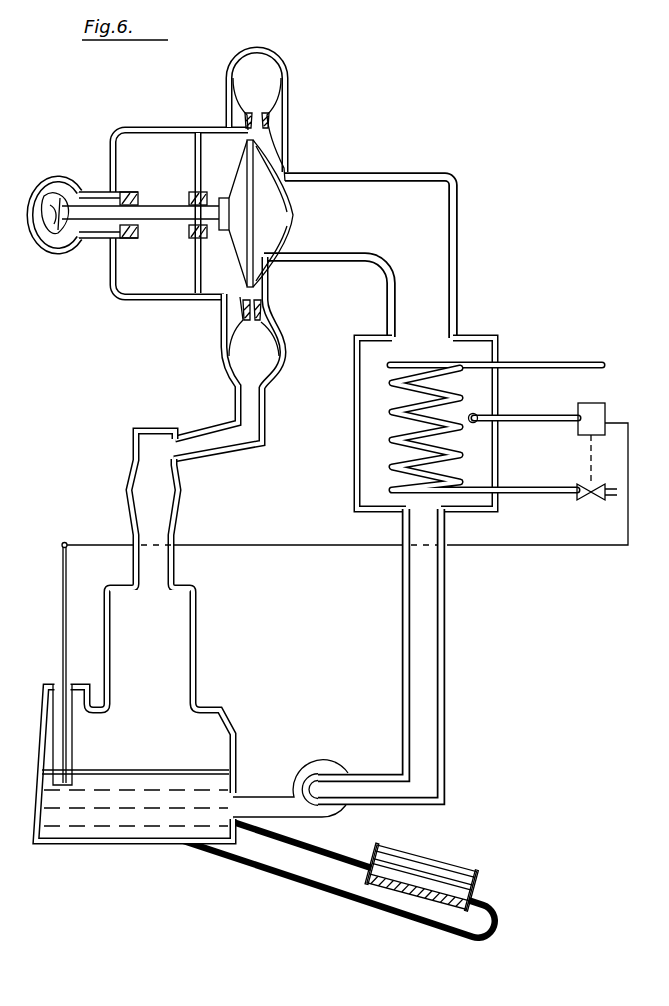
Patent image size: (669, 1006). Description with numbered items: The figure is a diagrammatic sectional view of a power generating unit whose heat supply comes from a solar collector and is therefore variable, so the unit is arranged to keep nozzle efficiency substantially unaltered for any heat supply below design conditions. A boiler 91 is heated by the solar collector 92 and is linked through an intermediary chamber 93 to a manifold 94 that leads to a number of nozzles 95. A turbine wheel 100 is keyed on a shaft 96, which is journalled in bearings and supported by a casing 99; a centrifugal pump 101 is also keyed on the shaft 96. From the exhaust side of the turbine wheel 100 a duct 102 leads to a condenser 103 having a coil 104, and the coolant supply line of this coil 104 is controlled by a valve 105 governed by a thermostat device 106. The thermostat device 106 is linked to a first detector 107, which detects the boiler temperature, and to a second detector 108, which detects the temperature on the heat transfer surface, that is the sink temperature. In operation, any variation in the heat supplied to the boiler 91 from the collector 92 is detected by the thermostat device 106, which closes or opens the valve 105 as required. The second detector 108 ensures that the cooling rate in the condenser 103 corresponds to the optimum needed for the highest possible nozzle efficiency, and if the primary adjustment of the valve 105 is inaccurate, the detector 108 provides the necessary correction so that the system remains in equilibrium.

The boiler 91 is at (232, 728).
The solar collector 92 is at (417, 858).
The intermediary chamber 93 is at (176, 513).
The manifold 94 is at (284, 368).
The nozzles 95 is at (270, 119).
The shaft 96 is at (168, 213).
The casing 99 is at (162, 128).
The turbine wheel 100 is at (283, 181).
The centrifugal pump 101 is at (68, 252).
The duct 102 is at (457, 201).
The condenser 103 is at (486, 356).
The coil 104 is at (409, 363).
The valve 105 is at (590, 494).
The thermostat device 106 is at (585, 410).
The first detector 107 is at (62, 583).
The second detector 108 is at (489, 418).